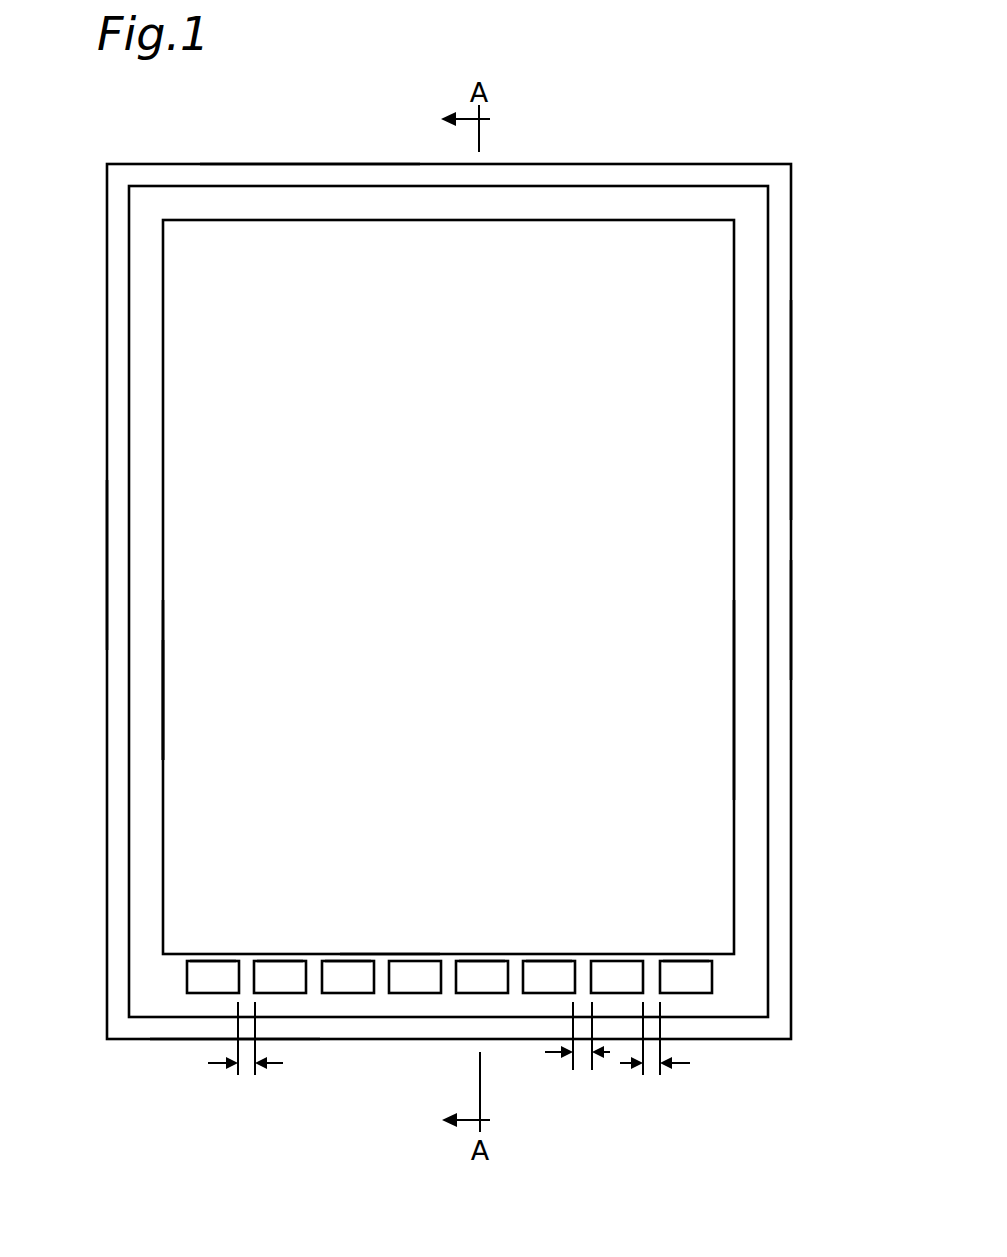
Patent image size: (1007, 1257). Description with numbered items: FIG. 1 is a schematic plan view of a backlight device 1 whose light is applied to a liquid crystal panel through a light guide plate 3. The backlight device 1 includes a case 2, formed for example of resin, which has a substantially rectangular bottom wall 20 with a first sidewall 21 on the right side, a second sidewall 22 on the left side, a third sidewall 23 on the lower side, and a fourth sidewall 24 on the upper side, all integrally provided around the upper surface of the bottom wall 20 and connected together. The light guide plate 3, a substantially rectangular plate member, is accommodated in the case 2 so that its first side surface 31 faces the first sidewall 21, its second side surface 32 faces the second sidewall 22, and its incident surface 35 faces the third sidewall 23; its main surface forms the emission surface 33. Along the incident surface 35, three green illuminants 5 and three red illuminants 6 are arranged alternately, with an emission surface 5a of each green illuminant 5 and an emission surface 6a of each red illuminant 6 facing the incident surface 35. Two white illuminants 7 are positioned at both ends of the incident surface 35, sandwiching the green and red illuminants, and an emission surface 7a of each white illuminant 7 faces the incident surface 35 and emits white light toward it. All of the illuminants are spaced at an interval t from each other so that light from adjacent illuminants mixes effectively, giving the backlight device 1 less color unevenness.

The backlight device 1 is at (608, 156).
The case 2 is at (800, 419).
The light guide plate 3 is at (152, 455).
The bottom wall 20 is at (752, 527).
The first sidewall 21 is at (787, 618).
The second sidewall 22 is at (112, 566).
The third sidewall 23 is at (232, 1038).
The fourth sidewall 24 is at (304, 163).
The first side surface 31 is at (735, 697).
The second side surface 32 is at (163, 697).
The emission surface 33 is at (192, 675).
The incident surface 35 is at (383, 955).
The green illuminant 5 is at (347, 985).
The red illuminant 6 is at (278, 985).
The white illuminant 7 is at (212, 985).
The emission surface of the green illuminant 5a is at (348, 960).
The emission surface of the red illuminant 6a is at (279, 960).
The emission surface of the white illuminant 7a is at (211, 960).
The interval t is at (249, 1066).